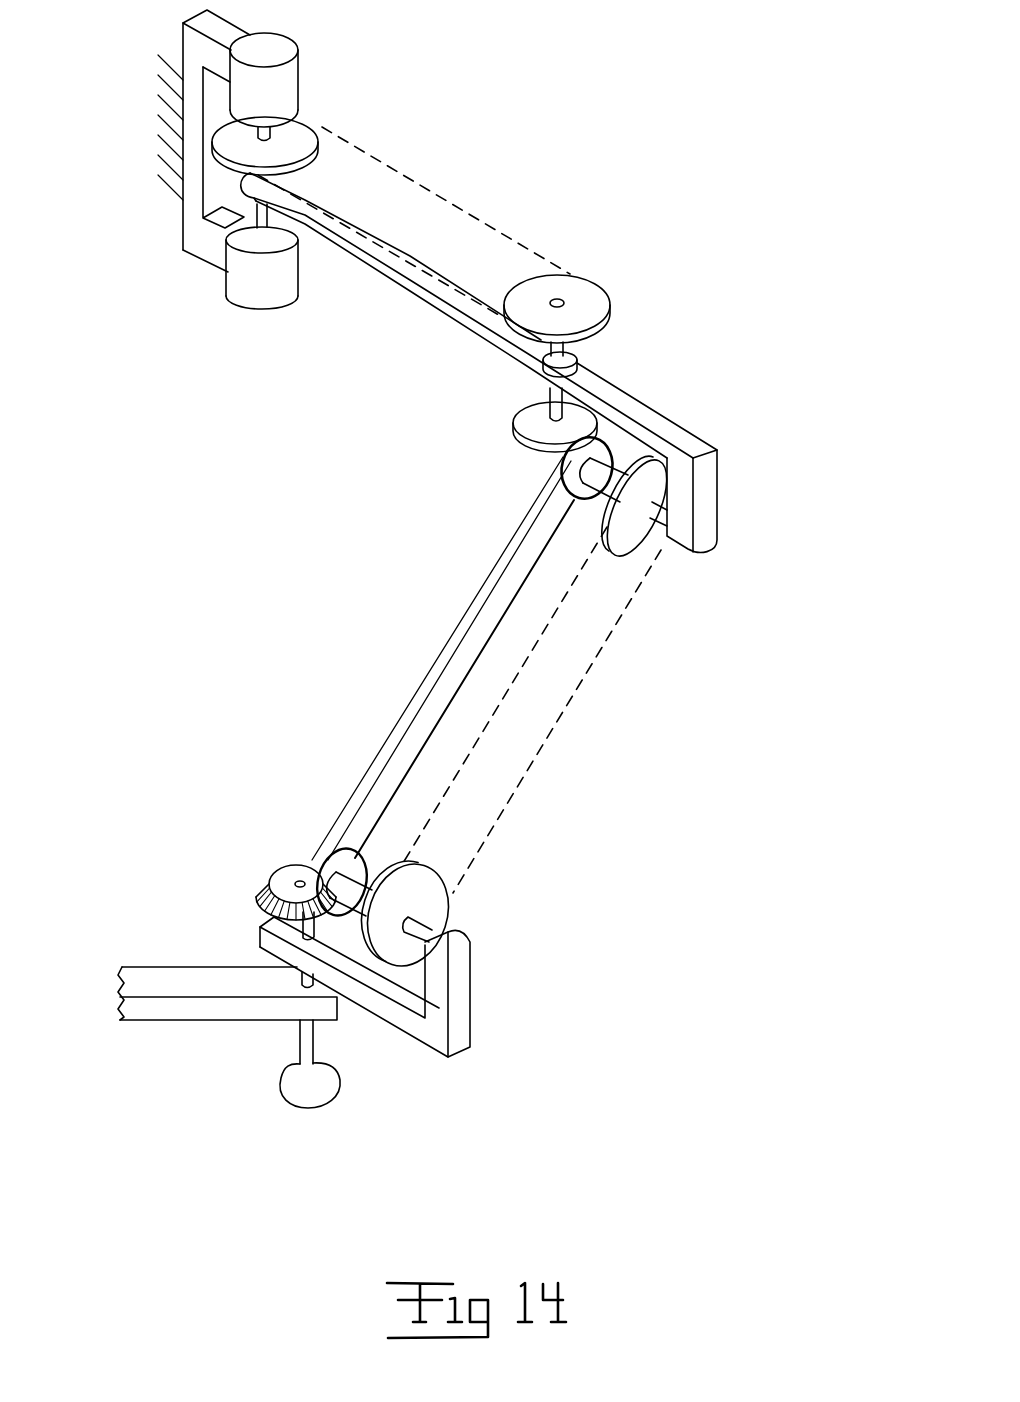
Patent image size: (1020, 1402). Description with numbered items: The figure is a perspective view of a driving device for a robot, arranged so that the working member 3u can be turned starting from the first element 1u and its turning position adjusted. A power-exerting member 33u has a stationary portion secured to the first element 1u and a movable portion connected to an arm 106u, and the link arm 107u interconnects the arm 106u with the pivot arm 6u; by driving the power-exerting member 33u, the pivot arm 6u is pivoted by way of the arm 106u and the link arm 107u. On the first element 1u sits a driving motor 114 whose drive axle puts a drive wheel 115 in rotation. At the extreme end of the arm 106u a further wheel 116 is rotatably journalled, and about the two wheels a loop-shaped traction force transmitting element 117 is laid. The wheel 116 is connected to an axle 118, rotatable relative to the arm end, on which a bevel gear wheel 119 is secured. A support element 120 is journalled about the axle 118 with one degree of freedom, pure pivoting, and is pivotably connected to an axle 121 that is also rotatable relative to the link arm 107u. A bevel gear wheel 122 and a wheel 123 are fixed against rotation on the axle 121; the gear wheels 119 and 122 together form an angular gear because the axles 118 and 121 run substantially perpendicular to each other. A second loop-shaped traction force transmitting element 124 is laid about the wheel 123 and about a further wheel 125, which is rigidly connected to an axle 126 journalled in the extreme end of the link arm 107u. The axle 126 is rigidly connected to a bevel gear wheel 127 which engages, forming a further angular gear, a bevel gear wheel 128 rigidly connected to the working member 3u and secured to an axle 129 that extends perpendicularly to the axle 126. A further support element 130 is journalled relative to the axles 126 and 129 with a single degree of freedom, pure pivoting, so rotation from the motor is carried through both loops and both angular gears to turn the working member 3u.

The first element 1u is at (173, 172).
The driving motor 114 is at (283, 80).
The drive wheel 115 is at (293, 139).
The power-exerting member 33u is at (270, 297).
The traction force transmitting element 117 is at (468, 212).
The arm 106u is at (425, 290).
The further wheel 116 is at (590, 296).
The axle 118 is at (549, 406).
The bevel gear wheel 119 is at (527, 430).
The support element 120 is at (660, 425).
The axle 121 is at (615, 478).
The bevel gear wheel 122 is at (572, 478).
The wheel 123 is at (645, 532).
The link arm 107u is at (440, 678).
The traction force transmitting element 124 is at (587, 672).
The axle 126 is at (372, 876).
The bevel gear wheel 127 is at (337, 865).
The bevel gear wheel 128 is at (288, 878).
The axle 129 is at (285, 926).
The pivot arm 6u is at (210, 982).
The further wheel 125 is at (430, 900).
The further support element 130 is at (458, 988).
The working member 3u is at (323, 1080).